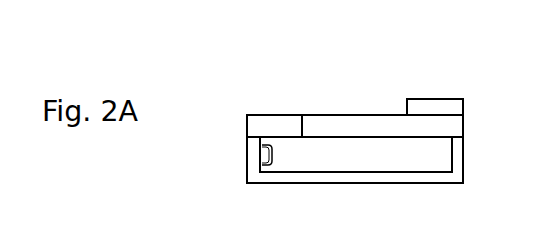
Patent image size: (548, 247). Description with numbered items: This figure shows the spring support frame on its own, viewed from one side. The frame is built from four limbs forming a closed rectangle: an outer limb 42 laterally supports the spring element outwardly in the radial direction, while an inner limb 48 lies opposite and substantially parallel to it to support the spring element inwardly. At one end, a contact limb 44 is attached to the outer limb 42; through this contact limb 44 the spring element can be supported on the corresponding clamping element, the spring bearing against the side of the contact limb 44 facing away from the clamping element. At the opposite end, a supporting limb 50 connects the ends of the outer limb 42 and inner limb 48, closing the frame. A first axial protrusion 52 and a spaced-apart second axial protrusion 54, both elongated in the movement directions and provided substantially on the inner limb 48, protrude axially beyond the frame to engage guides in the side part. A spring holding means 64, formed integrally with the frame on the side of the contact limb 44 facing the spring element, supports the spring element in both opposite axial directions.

The outer limb 42 is at (360, 178).
The contact limb 44 is at (252, 148).
The inner limb 48 is at (372, 128).
The supporting limb 50 is at (455, 148).
The first axial protrusion 52 is at (452, 108).
The second axial protrusion 54 is at (278, 120).
The spring holding means 64 is at (273, 153).